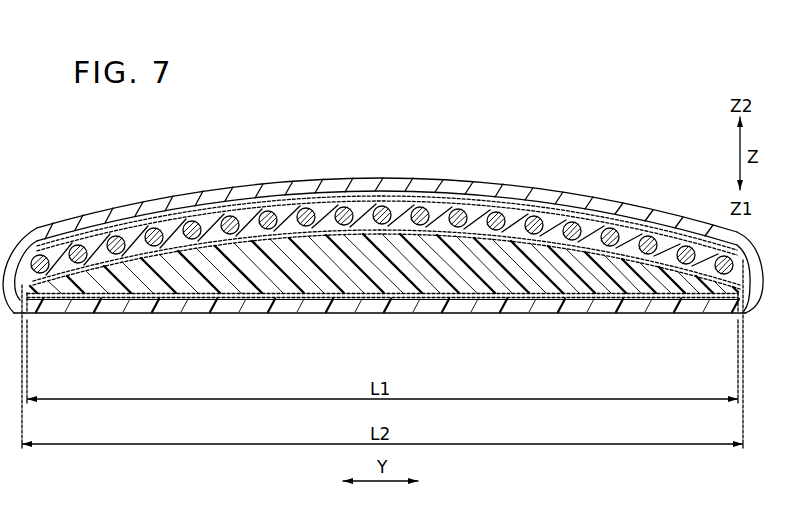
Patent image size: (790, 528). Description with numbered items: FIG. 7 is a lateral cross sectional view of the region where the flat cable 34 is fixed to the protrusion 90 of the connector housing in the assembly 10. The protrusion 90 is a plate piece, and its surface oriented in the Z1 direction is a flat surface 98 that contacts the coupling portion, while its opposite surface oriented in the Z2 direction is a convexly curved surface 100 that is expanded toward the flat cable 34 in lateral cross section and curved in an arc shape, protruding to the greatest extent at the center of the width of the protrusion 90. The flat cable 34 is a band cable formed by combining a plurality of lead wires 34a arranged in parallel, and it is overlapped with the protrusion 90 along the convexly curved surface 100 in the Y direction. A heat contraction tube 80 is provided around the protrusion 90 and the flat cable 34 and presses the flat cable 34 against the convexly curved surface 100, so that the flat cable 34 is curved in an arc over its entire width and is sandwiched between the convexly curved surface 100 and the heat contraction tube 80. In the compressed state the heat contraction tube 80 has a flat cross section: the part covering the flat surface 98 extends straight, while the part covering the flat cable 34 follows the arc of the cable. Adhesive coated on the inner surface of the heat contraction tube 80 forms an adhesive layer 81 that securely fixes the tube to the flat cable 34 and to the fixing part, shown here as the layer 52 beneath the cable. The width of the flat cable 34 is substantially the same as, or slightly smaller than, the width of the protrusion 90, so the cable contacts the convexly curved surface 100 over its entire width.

The cleaning/massaging device body 10 is at (555, 167).
The flat cable 34 is at (325, 197).
The lead wires 34a is at (231, 221).
The convexly curved surface 100 is at (62, 272).
The protrusion 90 is at (267, 282).
The heat contraction tube 80 is at (652, 303).
The flat surface 98 is at (522, 301).
The adhesive layer 81 is at (88, 306).
The adhesive layer 52 is at (204, 301).